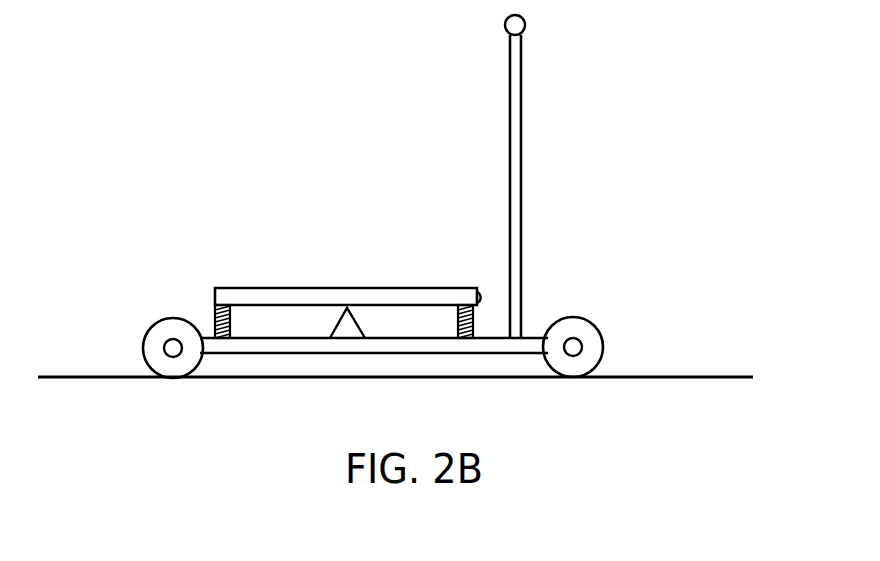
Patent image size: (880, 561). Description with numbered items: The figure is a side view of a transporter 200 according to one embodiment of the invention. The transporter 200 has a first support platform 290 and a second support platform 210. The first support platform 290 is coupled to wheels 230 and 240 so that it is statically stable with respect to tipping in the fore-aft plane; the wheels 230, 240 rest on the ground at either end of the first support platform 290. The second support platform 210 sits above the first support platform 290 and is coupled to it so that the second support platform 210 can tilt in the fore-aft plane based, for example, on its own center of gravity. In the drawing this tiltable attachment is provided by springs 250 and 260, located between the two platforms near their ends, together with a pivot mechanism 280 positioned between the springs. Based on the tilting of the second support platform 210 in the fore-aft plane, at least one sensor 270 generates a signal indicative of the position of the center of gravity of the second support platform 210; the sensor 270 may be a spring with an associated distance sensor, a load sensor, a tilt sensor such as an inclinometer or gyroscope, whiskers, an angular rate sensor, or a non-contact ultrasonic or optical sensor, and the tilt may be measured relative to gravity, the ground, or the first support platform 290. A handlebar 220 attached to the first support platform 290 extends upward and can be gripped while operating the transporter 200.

The transporter 200 is at (616, 160).
The second support platform 210 is at (296, 288).
The handlebar 220 is at (523, 62).
The wheel 230 is at (143, 346).
The wheel 240 is at (604, 341).
The spring 250 is at (458, 327).
The spring 260 is at (214, 318).
The sensor 270 is at (483, 288).
The pivot mechanism 280 is at (333, 330).
The first support platform 290 is at (297, 355).